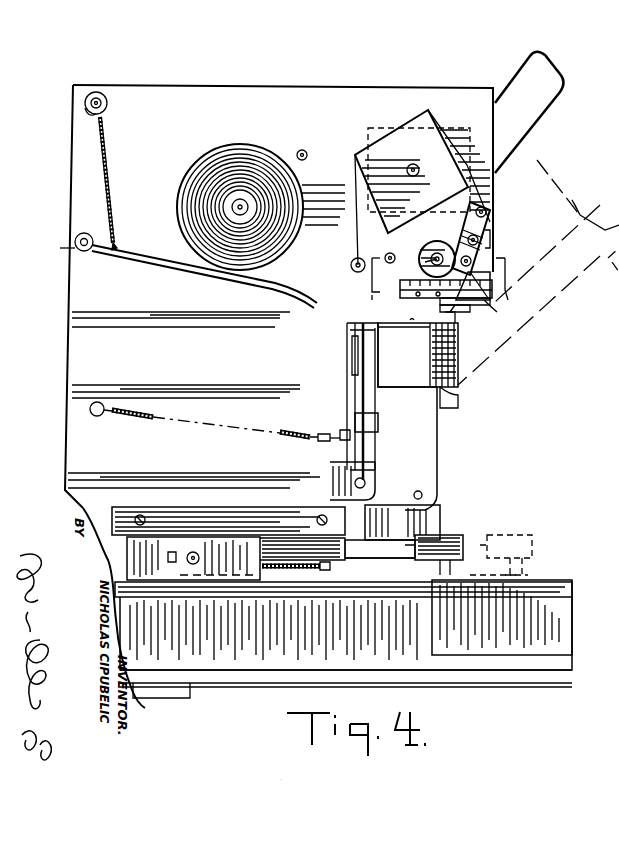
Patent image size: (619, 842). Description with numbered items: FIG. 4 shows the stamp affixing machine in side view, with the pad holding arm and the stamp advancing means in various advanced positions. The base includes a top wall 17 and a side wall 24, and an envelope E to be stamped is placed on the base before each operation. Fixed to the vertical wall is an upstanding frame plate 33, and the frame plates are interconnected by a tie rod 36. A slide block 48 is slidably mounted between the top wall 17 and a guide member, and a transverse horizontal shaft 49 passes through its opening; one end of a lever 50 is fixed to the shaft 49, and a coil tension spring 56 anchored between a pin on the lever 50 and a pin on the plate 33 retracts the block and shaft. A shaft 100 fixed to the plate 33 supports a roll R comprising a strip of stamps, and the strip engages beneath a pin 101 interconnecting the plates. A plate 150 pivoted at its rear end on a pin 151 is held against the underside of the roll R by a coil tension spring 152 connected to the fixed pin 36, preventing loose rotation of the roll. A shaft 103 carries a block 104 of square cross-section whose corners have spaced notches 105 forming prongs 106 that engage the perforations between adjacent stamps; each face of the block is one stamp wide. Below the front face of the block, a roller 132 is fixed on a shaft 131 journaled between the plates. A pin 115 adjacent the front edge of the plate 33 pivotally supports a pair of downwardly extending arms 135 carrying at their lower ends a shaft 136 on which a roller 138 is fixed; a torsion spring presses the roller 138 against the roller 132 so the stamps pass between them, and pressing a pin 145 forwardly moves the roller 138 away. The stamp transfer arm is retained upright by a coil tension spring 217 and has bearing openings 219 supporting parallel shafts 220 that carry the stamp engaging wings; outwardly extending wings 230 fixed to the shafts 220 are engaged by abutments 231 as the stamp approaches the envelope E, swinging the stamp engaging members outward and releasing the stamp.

The frame plate 33 is at (218, 100).
The tie rod 36 is at (104, 90).
The coil tension spring 152 is at (112, 183).
The pin 151 is at (74, 245).
The plate 150 is at (192, 272).
The roll R is at (258, 160).
The shaft 100 is at (238, 205).
The pin 101 is at (352, 260).
The notches 105 is at (428, 110).
The shaft 103 is at (410, 165).
The block 104 is at (440, 142).
The prongs 106 is at (390, 235).
The roller 132 is at (437, 248).
The shaft 131 is at (432, 262).
The pin 115 is at (486, 218).
The arms 135 is at (490, 222).
The pin 145 is at (490, 234).
The roller 138 is at (483, 260).
The shaft 136 is at (484, 300).
The top wall 17 is at (439, 279).
The shafts 220 is at (365, 448).
The wings 230 is at (380, 422).
The bearing openings 219 is at (368, 474).
The abutments 231 is at (424, 492).
The coil tension spring 217 is at (140, 412).
The slide block 48 is at (152, 550).
The shaft 49 is at (195, 550).
The lever 50 is at (385, 550).
The coil tension spring 56 is at (312, 573).
The side wall 24 is at (438, 634).
The envelope E is at (555, 578).